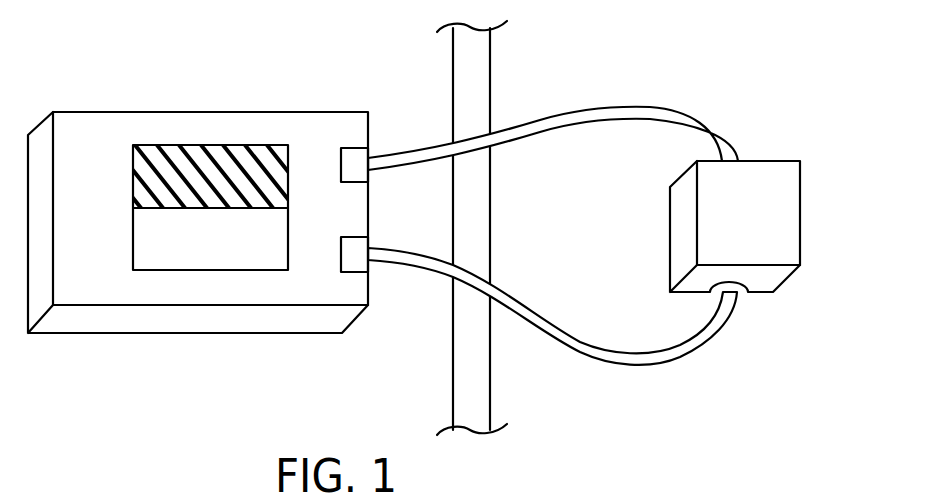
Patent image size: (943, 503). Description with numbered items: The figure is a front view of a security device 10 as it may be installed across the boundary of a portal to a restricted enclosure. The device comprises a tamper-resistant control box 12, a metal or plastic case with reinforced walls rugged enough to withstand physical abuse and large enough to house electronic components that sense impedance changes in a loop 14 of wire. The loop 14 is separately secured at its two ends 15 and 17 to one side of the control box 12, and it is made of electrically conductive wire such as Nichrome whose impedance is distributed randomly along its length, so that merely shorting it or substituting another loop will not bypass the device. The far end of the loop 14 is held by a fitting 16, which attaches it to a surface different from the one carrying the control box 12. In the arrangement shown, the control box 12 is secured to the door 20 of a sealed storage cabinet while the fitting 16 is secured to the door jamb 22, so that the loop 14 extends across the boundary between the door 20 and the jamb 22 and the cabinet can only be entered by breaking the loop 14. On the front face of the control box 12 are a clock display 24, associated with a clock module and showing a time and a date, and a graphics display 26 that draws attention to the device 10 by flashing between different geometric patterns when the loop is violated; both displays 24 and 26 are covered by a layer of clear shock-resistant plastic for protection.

The security device 10 is at (227, 236).
The control box 12 is at (133, 334).
The loop 14 is at (590, 364).
The end 15 is at (369, 160).
The fitting 16 is at (768, 233).
The end 17 is at (370, 261).
The door 20 is at (247, 429).
The door jamb 22 is at (830, 434).
The clock display 24 is at (133, 247).
The graphics display 26 is at (133, 188).